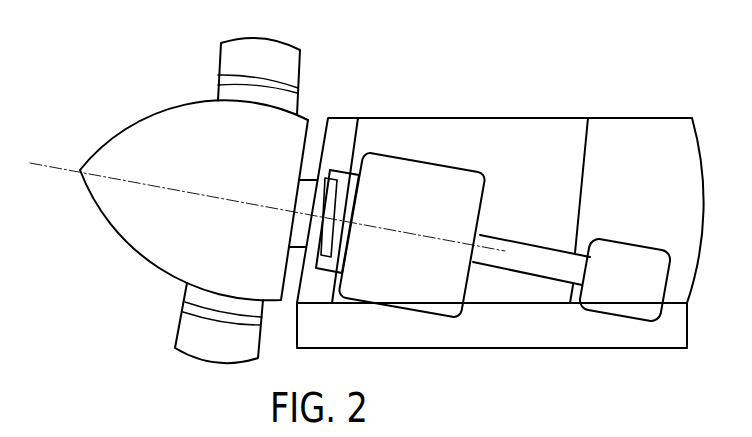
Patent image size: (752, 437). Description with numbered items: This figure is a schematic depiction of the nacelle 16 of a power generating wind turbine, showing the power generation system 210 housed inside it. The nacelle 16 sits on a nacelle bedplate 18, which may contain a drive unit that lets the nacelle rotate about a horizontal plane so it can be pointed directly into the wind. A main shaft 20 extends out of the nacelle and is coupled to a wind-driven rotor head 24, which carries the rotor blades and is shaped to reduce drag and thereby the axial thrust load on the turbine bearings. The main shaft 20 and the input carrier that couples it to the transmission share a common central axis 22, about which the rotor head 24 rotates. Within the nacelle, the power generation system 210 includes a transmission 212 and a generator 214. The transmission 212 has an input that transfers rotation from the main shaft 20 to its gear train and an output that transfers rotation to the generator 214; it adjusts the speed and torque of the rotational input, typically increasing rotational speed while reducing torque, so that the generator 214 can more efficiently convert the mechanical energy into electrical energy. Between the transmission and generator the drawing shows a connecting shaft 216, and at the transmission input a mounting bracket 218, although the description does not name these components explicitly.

The nacelle 16 is at (612, 41).
The nacelle bedplate 18 is at (582, 348).
The main shaft 20 is at (302, 233).
The central axis 22 is at (67, 170).
The rotor head 24 is at (155, 113).
The power generation system 210 is at (549, 109).
The transmission 212 is at (438, 158).
The generator 214 is at (628, 238).
The drive shaft 216 is at (529, 241).
The bracket 218 is at (334, 184).